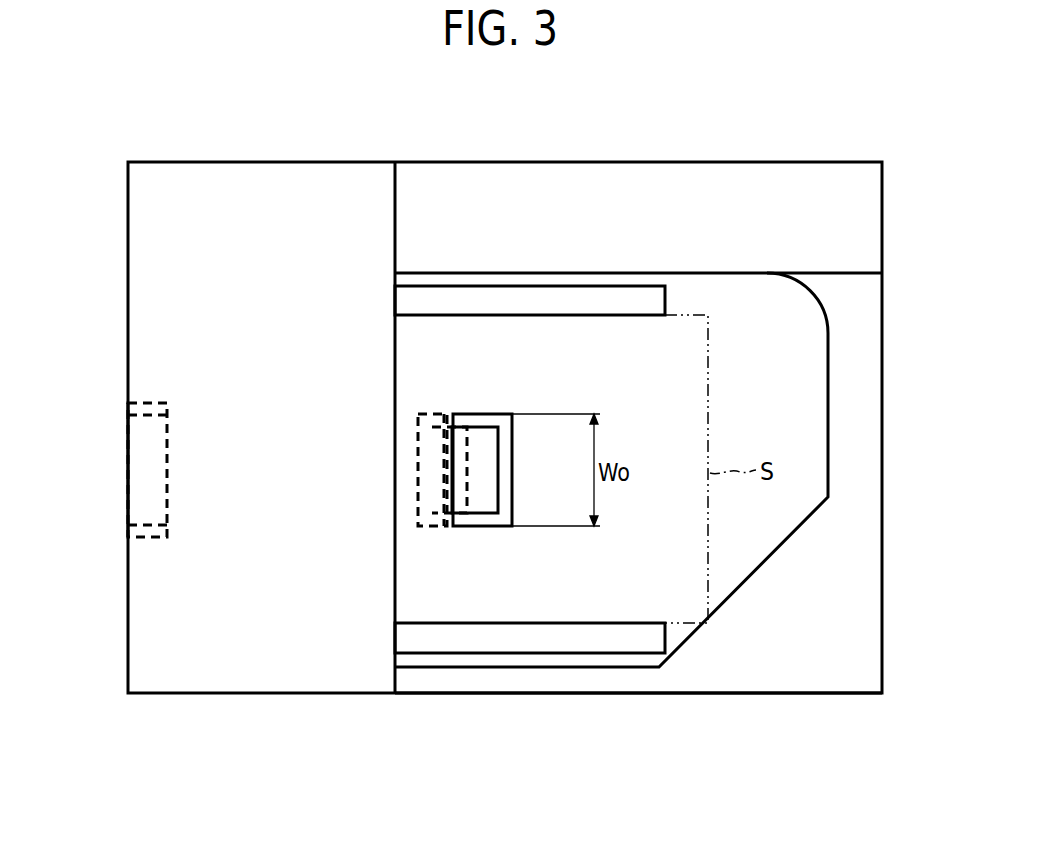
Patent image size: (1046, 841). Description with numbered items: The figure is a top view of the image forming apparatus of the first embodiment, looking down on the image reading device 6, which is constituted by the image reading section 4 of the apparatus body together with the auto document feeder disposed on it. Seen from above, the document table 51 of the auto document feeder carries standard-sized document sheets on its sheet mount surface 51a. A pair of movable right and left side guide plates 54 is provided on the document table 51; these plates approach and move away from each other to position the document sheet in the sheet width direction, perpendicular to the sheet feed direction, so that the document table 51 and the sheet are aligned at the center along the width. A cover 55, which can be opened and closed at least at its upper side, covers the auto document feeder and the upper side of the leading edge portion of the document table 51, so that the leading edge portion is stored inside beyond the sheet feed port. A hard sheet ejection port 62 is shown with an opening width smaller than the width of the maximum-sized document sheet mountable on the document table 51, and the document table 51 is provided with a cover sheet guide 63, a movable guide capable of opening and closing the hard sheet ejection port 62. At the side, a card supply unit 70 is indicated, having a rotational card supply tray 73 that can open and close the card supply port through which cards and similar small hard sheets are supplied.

The image reading device 6 is at (124, 178).
The image reading section 4 is at (825, 685).
The document table 51 is at (817, 437).
The sheet mount surface 51a is at (805, 347).
The side guide plates 54 is at (580, 297).
The cover 55 is at (272, 688).
The hard sheet ejection port 62 is at (484, 412).
The cover sheet guide 63 is at (488, 474).
The card supply unit 70 is at (124, 510).
The card supply tray 73 is at (140, 471).